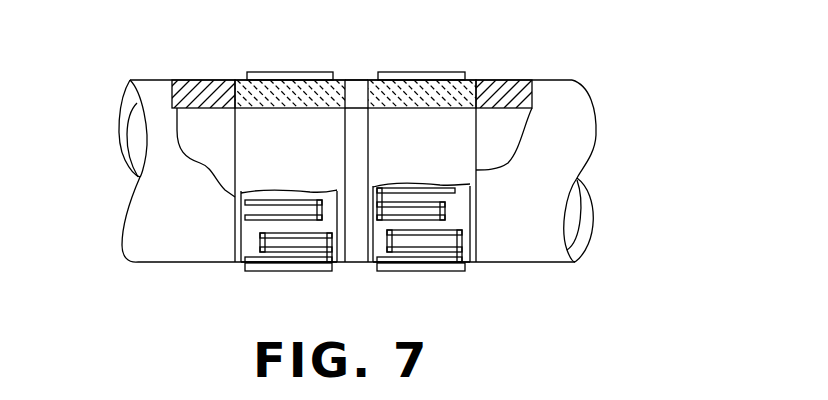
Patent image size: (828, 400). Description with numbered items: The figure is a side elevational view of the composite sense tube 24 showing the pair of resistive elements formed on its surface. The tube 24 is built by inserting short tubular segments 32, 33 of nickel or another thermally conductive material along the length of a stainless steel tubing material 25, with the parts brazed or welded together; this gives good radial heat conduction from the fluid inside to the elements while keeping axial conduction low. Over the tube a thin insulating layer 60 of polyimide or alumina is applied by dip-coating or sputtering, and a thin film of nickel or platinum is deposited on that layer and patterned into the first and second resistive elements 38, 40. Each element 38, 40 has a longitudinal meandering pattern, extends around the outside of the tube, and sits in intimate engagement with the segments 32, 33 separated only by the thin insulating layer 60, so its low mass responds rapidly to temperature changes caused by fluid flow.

The sense tube 24 is at (163, 243).
The stainless steel tubing material 25 is at (197, 92).
The tubular segment 32 is at (474, 80).
The tubular segment 33 is at (241, 80).
The first resistive element 38 is at (307, 270).
The second resistive element 40 is at (436, 270).
The insulating layer 60 is at (372, 79).